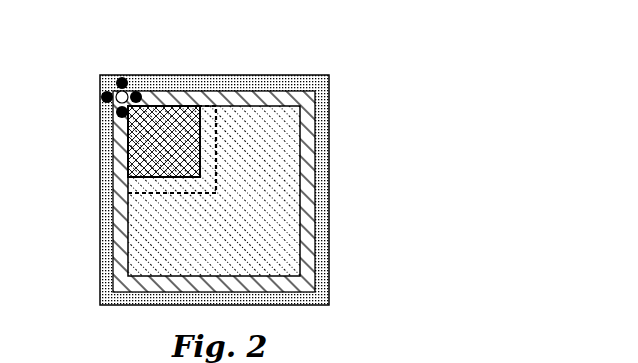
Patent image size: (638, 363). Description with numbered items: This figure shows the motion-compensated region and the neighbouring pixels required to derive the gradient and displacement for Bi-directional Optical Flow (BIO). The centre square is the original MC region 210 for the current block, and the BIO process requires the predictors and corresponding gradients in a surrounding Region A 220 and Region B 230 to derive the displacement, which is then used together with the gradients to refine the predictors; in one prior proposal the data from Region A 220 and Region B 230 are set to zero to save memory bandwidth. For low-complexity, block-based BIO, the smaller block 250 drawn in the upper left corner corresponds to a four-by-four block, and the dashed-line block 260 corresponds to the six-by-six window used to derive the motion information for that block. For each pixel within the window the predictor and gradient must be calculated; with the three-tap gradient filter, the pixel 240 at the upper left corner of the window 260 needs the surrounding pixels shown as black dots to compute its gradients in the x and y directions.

The original MC region 210 is at (300, 205).
The Region A 220 is at (329, 120).
The Region B 230 is at (315, 160).
The pixel 240 is at (126, 86).
The smaller block 250 is at (200, 124).
The dashed-line block 260 is at (217, 167).